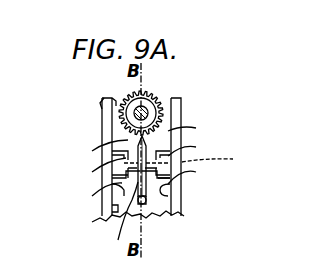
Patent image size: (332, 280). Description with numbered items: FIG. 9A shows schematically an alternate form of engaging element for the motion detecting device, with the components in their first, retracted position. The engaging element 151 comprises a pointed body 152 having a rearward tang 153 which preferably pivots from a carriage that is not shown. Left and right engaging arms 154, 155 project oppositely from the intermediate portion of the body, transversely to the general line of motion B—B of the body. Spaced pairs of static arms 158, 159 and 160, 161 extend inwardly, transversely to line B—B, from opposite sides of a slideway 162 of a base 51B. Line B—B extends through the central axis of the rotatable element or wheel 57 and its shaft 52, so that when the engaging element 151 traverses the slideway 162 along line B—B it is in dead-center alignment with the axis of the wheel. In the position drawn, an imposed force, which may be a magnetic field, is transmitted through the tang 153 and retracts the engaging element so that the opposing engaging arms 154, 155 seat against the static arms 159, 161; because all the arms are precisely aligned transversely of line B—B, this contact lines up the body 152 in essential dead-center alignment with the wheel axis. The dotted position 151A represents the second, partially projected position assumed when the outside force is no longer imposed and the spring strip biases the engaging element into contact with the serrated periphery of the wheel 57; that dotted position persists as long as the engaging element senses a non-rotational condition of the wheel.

The rotatable element or wheel 57 is at (120, 103).
The shaft 52 is at (146, 108).
The base 51B is at (101, 140).
The static arm 158 is at (112, 151).
The left engaging arm 154 is at (118, 174).
The static arm 159 is at (118, 186).
The slideway 162 is at (112, 208).
The engaging element 151 is at (118, 240).
The pointed body 152 is at (147, 141).
The static arm 160 is at (160, 150).
The dotted position of the engaging element 151A is at (199, 159).
The right engaging arm 155 is at (168, 175).
The static arm 161 is at (168, 192).
The rearward tang 153 is at (160, 214).